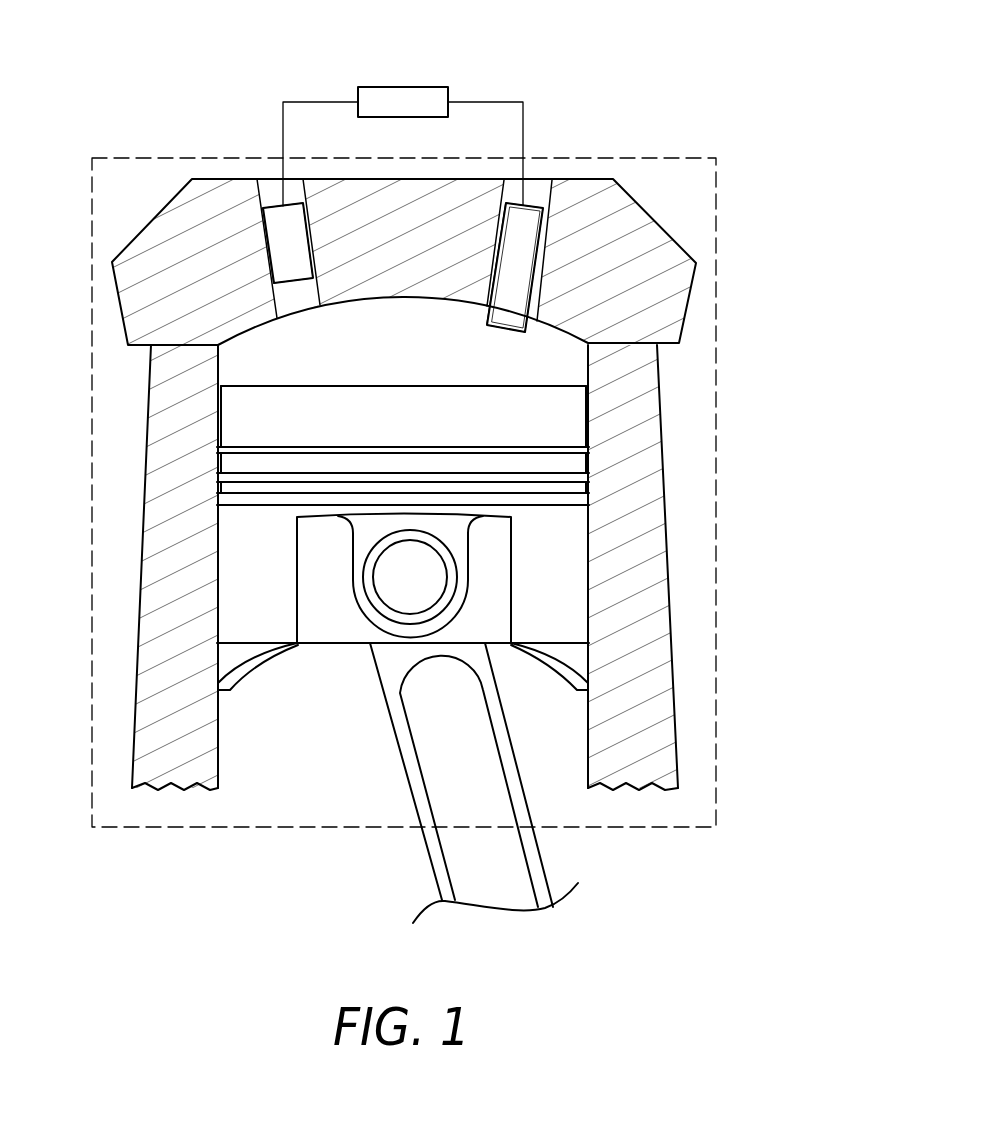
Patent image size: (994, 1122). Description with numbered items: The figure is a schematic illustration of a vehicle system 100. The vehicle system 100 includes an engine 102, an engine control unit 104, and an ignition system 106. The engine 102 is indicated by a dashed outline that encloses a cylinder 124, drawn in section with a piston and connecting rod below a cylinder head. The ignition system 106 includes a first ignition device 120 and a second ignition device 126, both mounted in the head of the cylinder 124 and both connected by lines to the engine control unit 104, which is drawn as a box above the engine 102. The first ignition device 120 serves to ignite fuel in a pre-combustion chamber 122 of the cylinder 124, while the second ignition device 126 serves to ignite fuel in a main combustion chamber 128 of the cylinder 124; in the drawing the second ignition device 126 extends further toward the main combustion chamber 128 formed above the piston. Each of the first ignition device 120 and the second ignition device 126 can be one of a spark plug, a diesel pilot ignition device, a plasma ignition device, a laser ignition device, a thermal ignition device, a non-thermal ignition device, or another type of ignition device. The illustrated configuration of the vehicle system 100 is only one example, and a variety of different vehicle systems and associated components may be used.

The vehicle system 100 is at (752, 328).
The engine 102 is at (694, 158).
The engine control unit 104 is at (392, 85).
The ignition system 106 is at (276, 212).
The first ignition device 120 is at (278, 252).
The pre-combustion chamber 122 is at (283, 303).
The cylinder 124 is at (657, 476).
The second ignition device 126 is at (530, 252).
The main combustion chamber 128 is at (524, 352).